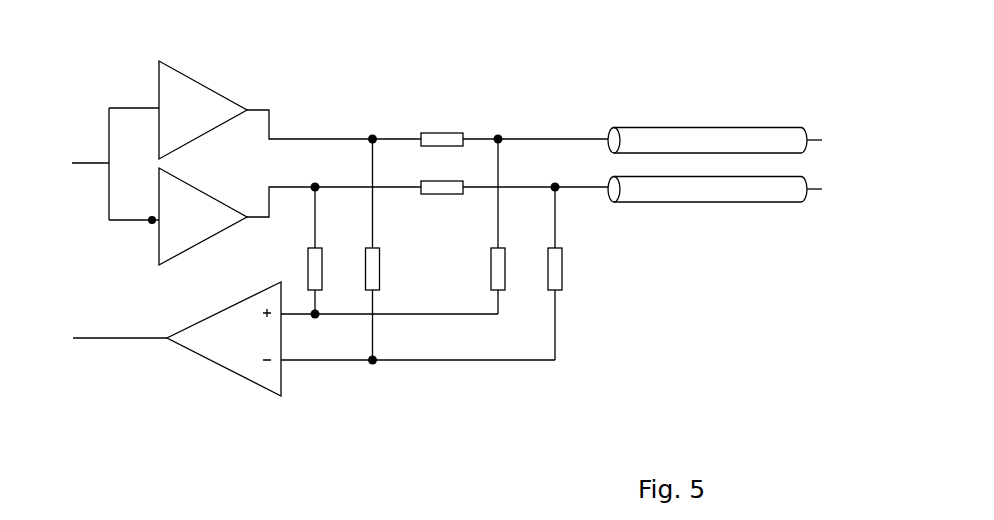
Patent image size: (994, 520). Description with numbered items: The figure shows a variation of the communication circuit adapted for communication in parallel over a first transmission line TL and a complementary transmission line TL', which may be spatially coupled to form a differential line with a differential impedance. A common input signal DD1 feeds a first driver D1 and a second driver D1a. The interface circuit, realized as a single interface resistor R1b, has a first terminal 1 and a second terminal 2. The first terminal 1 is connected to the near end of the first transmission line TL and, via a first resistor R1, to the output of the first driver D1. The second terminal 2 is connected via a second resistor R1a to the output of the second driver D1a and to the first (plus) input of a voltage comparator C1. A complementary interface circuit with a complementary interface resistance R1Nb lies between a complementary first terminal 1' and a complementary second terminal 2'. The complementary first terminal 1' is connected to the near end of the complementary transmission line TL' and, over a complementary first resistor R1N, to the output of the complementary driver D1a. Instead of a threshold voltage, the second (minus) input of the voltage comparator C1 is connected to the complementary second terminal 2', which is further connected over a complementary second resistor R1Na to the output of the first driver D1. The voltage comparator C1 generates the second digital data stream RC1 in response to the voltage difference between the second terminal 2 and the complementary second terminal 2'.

The transmit data input DD1 is at (93, 166).
The first driver D1 is at (290, 110).
The second driver D1a is at (290, 216).
The first resistor R1 is at (514, 127).
The complementary first resistor R1N is at (501, 175).
The first terminal 1 is at (504, 126).
The complementary first terminal 1' is at (565, 176).
The first transmission line TL is at (715, 128).
The complementary transmission line TL' is at (715, 178).
The second resistor R1a is at (329, 249).
The complementary second resistor R1Na is at (394, 248).
The interface resistor R1b is at (513, 226).
The complementary interface resistance R1Nb is at (577, 273).
The voltage comparator C1 is at (361, 339).
The second digital data stream RC1 is at (97, 338).
The second terminal 2 is at (320, 329).
The complementary second terminal 2' is at (384, 372).